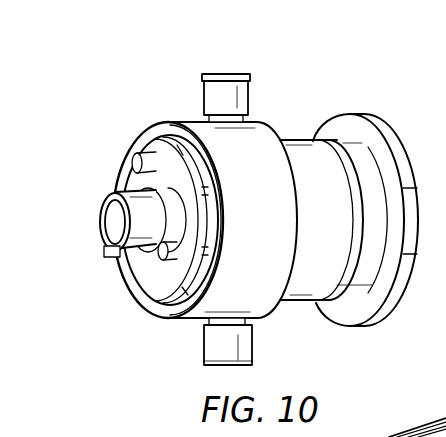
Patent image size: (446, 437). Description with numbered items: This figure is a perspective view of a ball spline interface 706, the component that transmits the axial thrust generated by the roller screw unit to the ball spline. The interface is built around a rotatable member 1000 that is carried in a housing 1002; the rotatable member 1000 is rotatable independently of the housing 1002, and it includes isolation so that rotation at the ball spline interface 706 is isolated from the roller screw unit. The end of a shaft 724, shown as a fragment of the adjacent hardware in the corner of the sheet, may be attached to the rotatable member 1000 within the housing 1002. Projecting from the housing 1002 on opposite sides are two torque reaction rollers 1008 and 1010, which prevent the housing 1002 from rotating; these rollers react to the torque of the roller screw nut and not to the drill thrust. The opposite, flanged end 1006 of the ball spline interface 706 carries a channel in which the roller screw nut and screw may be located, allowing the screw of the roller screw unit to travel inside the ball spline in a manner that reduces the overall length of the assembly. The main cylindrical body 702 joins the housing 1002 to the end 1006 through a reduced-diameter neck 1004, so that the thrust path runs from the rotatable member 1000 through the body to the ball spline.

The housing body 702 is at (287, 110).
The ball spline interface 706 is at (222, 72).
The rotatable member 1000 is at (111, 224).
The housing 1002 is at (122, 273).
The neck 1004 is at (293, 302).
The end 1006 is at (380, 96).
The torque reaction roller 1008 is at (203, 92).
The torque reaction roller 1010 is at (203, 343).
The shaft 724 is at (445, 414).